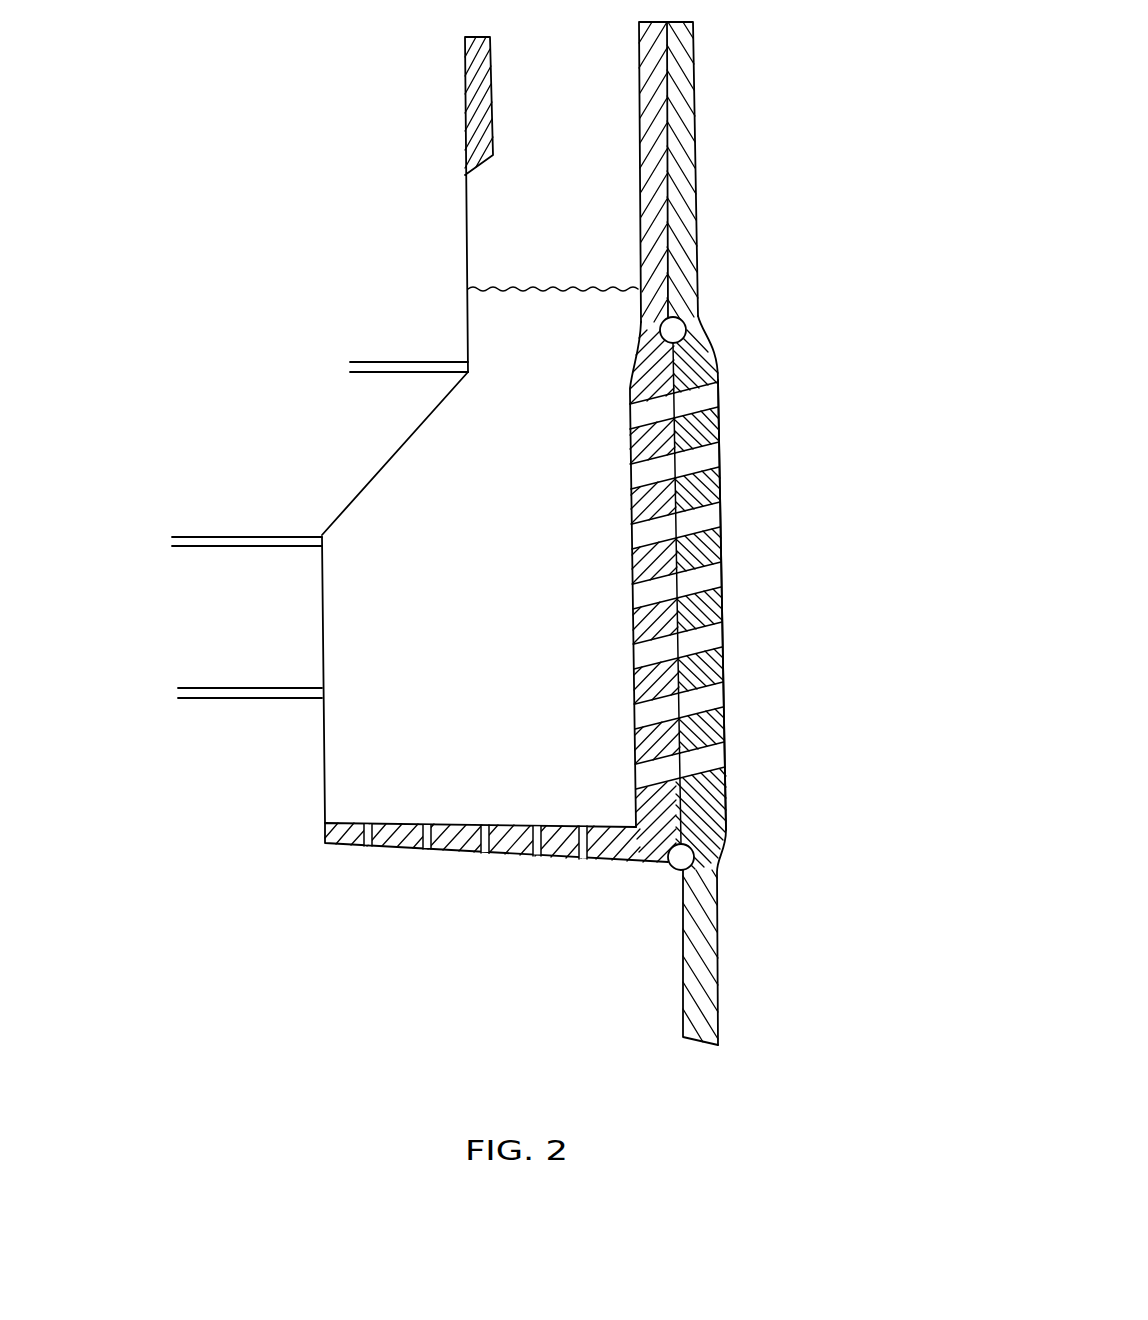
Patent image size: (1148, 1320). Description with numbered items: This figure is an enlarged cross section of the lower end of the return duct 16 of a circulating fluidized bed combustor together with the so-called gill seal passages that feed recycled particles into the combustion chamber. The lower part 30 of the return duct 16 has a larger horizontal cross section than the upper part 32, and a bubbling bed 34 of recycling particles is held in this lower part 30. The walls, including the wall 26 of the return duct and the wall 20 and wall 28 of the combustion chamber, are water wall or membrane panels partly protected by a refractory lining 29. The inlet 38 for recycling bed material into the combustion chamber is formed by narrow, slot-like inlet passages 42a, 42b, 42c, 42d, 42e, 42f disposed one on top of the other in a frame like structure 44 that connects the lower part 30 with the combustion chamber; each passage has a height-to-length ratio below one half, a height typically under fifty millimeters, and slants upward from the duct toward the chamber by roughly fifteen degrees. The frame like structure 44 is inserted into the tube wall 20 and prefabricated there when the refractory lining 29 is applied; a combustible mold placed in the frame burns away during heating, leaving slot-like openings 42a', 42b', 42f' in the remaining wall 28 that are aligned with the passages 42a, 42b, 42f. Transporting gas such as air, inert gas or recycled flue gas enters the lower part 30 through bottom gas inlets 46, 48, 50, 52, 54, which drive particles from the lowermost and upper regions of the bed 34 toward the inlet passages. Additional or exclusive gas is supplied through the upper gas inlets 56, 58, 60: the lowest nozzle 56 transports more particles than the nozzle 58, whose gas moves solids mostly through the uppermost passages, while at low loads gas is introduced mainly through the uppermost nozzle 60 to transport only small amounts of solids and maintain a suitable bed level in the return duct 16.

The return duct 16 is at (273, 252).
The wall 20 is at (695, 95).
The wall 26 is at (323, 753).
The wall 28 is at (722, 603).
The refractory lining 29 is at (657, 247).
The lower part of the return duct 30 is at (430, 628).
The upper part of the return duct 32 is at (555, 90).
The bubbling bed 34 is at (473, 560).
The inlet 38 is at (786, 340).
The inlet passage 42a is at (762, 396).
The slot like opening 42a' is at (596, 400).
The inlet passage 42b is at (762, 458).
The slot like opening 42b' is at (599, 467).
The inlet passage 42c is at (722, 578).
The inlet passage 42d is at (723, 636).
The inlet passage 42e is at (725, 707).
The inlet passage 42f is at (769, 766).
The slot like opening 42f' is at (599, 763).
The frame like structure 44 is at (700, 352).
The bottom gas inlet 46 is at (583, 850).
The bottom gas inlet 48 is at (537, 848).
The bottom gas inlet 50 is at (485, 847).
The bottom gas inlet 52 is at (427, 842).
The bottom gas inlet 54 is at (368, 847).
The upper gas inlet 56 is at (232, 694).
The upper gas inlet 58 is at (231, 542).
The upper gas inlet 60 is at (389, 363).